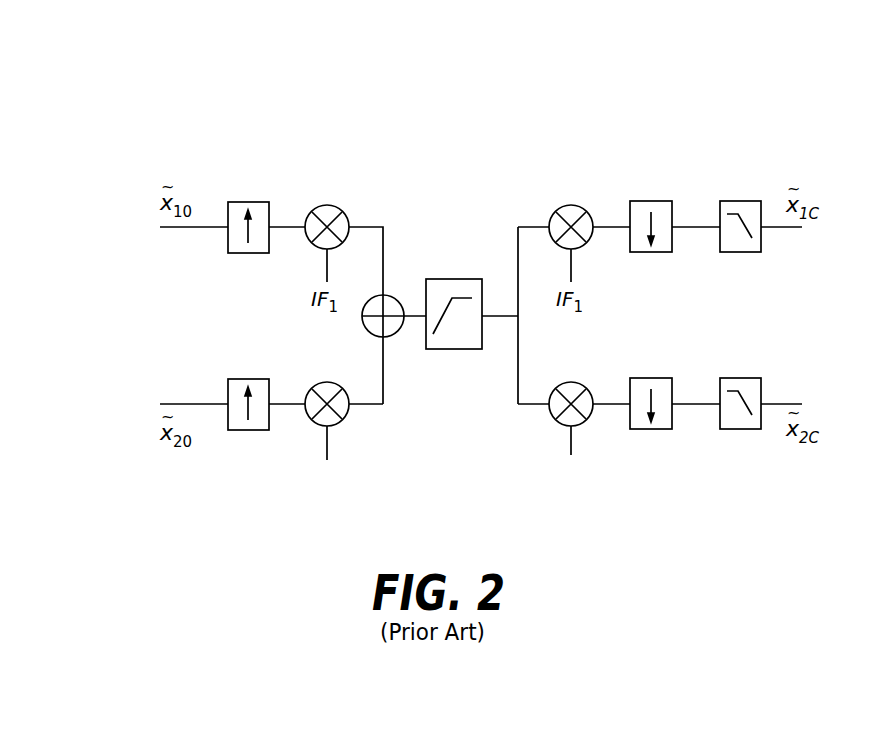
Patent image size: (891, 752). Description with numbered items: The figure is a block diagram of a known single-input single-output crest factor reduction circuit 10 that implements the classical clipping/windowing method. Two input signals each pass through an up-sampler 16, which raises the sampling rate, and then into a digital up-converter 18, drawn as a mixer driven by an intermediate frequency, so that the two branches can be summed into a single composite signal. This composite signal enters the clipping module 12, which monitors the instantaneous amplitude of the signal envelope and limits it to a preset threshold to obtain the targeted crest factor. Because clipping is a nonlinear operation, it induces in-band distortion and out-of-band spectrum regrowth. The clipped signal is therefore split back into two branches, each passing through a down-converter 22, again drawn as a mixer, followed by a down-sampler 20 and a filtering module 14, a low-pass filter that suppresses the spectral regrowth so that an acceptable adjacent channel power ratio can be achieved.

The prior art clipping system 10 is at (450, 144).
The clipping module 12 is at (453, 279).
The filtering module 14 is at (747, 172).
The up-sampler 16 is at (253, 172).
The digital up-converter 18 is at (343, 420).
The down-sampler 20 is at (633, 165).
The down-converter 22 is at (557, 419).